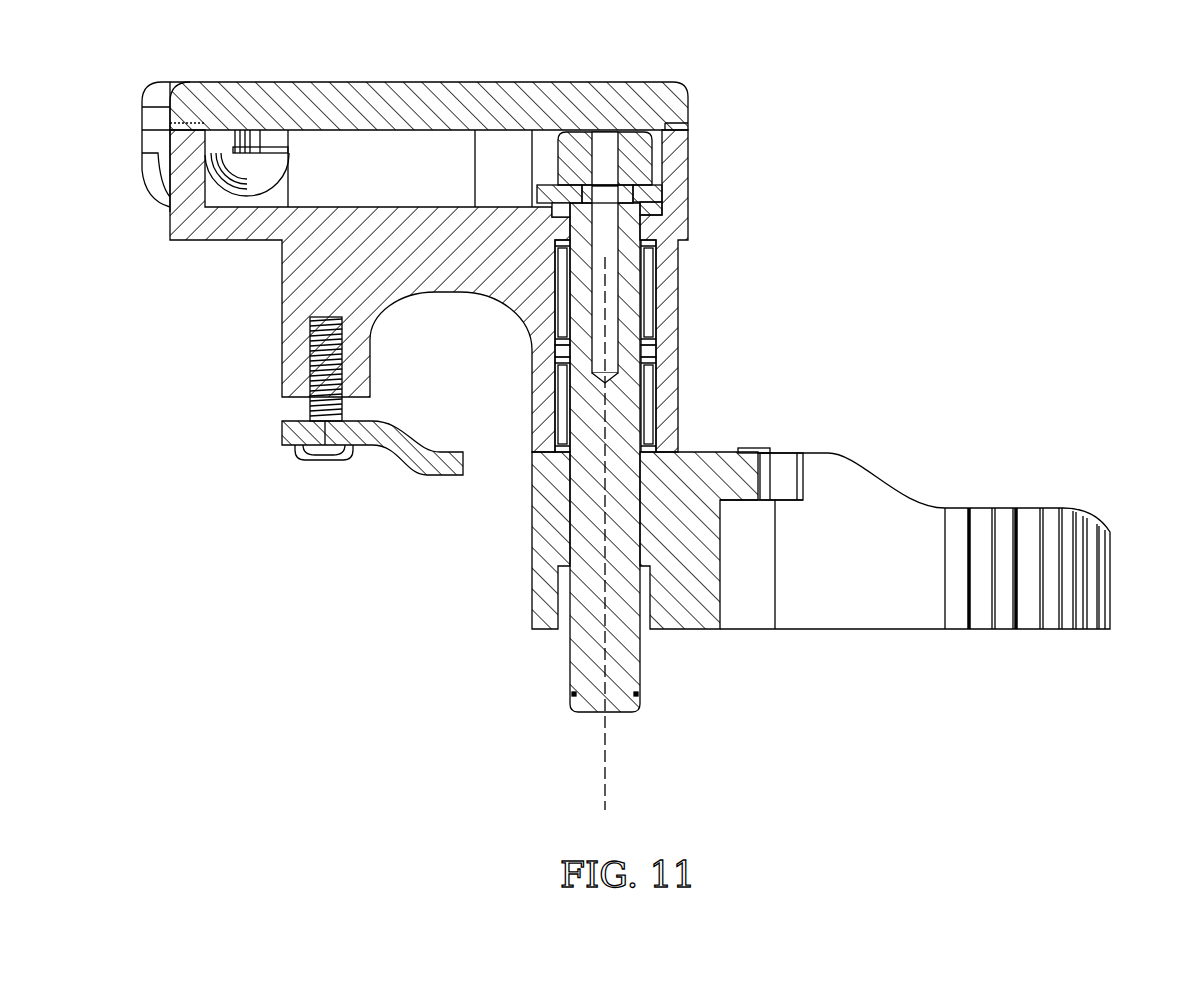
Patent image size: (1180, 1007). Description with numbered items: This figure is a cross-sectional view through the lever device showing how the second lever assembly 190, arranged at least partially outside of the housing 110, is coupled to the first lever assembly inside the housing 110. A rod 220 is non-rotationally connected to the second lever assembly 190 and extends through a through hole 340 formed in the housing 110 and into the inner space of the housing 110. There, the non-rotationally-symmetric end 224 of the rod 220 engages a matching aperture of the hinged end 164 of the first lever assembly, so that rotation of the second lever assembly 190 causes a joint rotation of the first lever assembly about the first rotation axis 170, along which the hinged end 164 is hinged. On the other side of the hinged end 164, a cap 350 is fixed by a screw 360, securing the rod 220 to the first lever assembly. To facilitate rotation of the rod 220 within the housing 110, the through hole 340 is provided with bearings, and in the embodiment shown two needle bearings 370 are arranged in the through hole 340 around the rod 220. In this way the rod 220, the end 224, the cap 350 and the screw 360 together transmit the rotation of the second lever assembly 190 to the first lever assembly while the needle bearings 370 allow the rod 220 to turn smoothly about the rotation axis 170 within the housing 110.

The housing 110 is at (682, 308).
The hinged end 164 is at (643, 198).
The first rotation axis 170 is at (607, 779).
The second lever assembly 190 is at (893, 492).
The rod 220 is at (575, 670).
The non-rotationally-symmetric end 224 is at (643, 225).
The through hole 340 is at (664, 448).
The cap 350 is at (567, 155).
The screw 360 is at (602, 153).
The needle bearing 370 is at (647, 282).